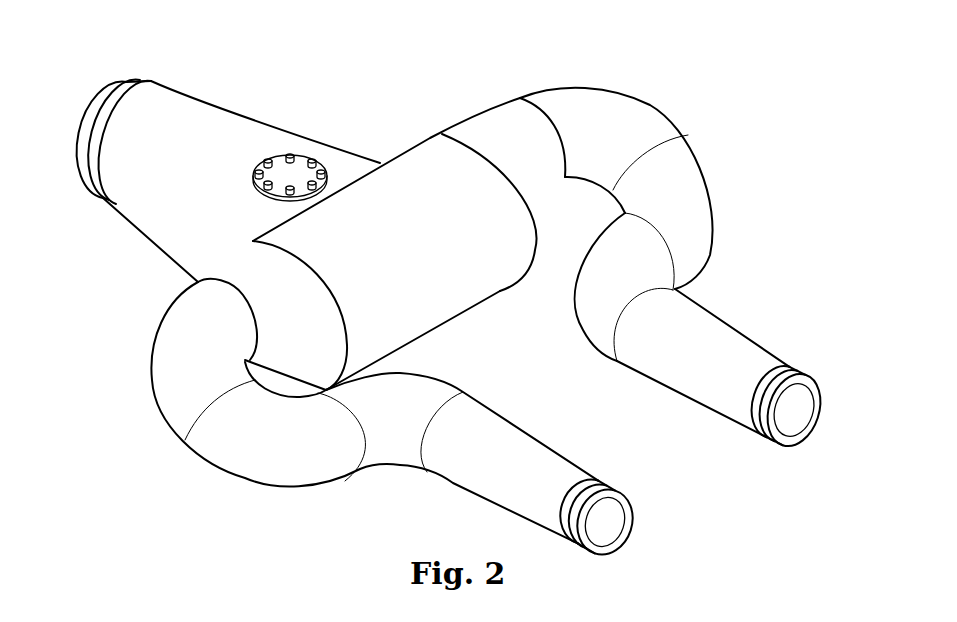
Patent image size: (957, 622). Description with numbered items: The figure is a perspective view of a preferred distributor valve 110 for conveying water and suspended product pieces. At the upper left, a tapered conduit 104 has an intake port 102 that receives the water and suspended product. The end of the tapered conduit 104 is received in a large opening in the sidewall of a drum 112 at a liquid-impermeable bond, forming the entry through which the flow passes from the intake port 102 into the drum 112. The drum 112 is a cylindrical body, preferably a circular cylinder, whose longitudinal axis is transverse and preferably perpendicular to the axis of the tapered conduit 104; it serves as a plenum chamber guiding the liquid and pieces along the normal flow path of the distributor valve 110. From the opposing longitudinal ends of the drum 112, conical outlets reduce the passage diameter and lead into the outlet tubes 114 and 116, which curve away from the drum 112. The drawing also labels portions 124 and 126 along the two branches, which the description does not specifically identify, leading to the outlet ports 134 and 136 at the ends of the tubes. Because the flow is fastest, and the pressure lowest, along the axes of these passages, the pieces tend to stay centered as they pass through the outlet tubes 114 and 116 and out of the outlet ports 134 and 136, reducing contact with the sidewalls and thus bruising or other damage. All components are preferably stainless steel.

The intake port 102 is at (125, 81).
The tapered conduit 104 is at (228, 118).
The distributor valve 110 is at (665, 85).
The drum 112 is at (435, 308).
The outlet tube 114 is at (167, 377).
The outlet tube 116 is at (687, 215).
The first outlet pipe 124 is at (478, 480).
The second outlet pipe 126 is at (708, 329).
The outlet port 134 is at (613, 493).
The outlet port 136 is at (799, 373).